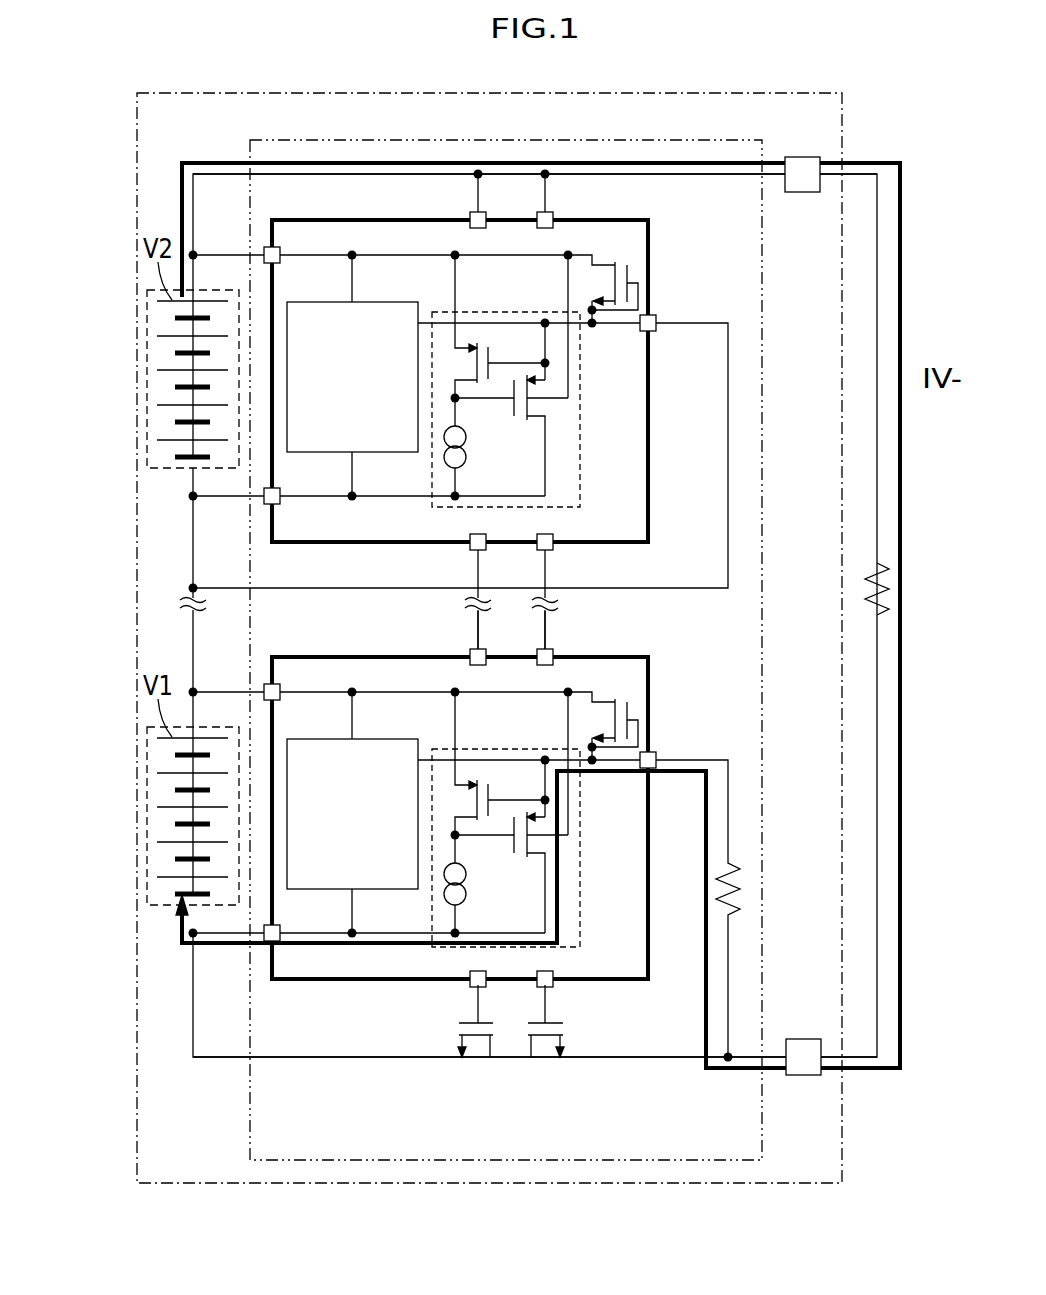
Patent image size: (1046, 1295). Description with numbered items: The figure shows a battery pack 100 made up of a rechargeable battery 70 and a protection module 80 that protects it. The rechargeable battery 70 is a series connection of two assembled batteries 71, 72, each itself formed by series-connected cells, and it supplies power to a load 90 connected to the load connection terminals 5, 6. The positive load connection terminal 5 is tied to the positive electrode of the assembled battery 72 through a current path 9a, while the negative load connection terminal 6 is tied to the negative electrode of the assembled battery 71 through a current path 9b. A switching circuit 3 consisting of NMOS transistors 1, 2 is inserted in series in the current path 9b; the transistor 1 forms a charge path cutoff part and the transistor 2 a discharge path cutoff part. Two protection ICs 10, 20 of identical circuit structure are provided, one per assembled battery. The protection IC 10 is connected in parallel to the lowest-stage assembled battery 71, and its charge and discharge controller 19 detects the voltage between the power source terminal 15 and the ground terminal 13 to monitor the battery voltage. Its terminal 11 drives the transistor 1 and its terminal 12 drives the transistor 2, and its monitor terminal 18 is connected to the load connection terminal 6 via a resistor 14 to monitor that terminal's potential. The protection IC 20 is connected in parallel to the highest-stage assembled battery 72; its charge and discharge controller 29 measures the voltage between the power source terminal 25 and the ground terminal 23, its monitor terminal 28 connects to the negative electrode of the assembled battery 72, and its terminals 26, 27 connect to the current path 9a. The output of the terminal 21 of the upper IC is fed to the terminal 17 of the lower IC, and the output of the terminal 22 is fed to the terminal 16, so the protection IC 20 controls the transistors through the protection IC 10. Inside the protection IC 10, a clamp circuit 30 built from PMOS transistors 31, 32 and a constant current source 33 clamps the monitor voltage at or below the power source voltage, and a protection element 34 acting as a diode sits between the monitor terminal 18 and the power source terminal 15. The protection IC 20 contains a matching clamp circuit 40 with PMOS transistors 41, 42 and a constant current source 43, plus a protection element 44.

The transistor 1 is at (520, 1058).
The transistor 2 is at (506, 1058).
The switching circuit 3 is at (511, 1071).
The load connection terminal 5 is at (801, 192).
The load connection terminal 6 is at (803, 1039).
The current path 9a is at (340, 175).
The current path 9b is at (340, 1058).
The protection IC 10 is at (453, 812).
The terminal 11 is at (572, 964).
The terminal 12 is at (451, 964).
The ground terminal 13 is at (300, 948).
The resistor 14 is at (718, 878).
The power source terminal 15 is at (300, 682).
The terminal 16 is at (453, 672).
The terminal 17 is at (570, 672).
The monitor terminal 18 is at (678, 749).
The charge and discharge controller 19 is at (355, 799).
The protection IC 20 is at (630, 220).
The terminal 21 is at (553, 536).
The terminal 22 is at (470, 536).
The ground terminal 23 is at (281, 502).
The power source terminal 25 is at (281, 250).
The terminal 26 is at (471, 229).
The terminal 27 is at (553, 229).
The monitor terminal 28 is at (657, 318).
The charge and discharge controller 29 is at (370, 302).
The clamp circuit 30 is at (506, 819).
The PMOS transistor 31 is at (500, 763).
The PMOS transistor 32 is at (511, 872).
The constant current source 33 is at (479, 884).
The protection element 34 is at (632, 720).
The clamp circuit 40 is at (512, 312).
The PMOS transistor 41 is at (490, 352).
The PMOS transistor 42 is at (512, 408).
The constant current source 43 is at (466, 455).
The protection element 44 is at (638, 270).
The rechargeable battery 70 is at (139, 597).
The assembled battery 71 is at (88, 824).
The assembled battery 72 is at (147, 380).
The protection module 80 is at (695, 140).
The load 90 is at (909, 589).
The battery pack 100 is at (690, 93).